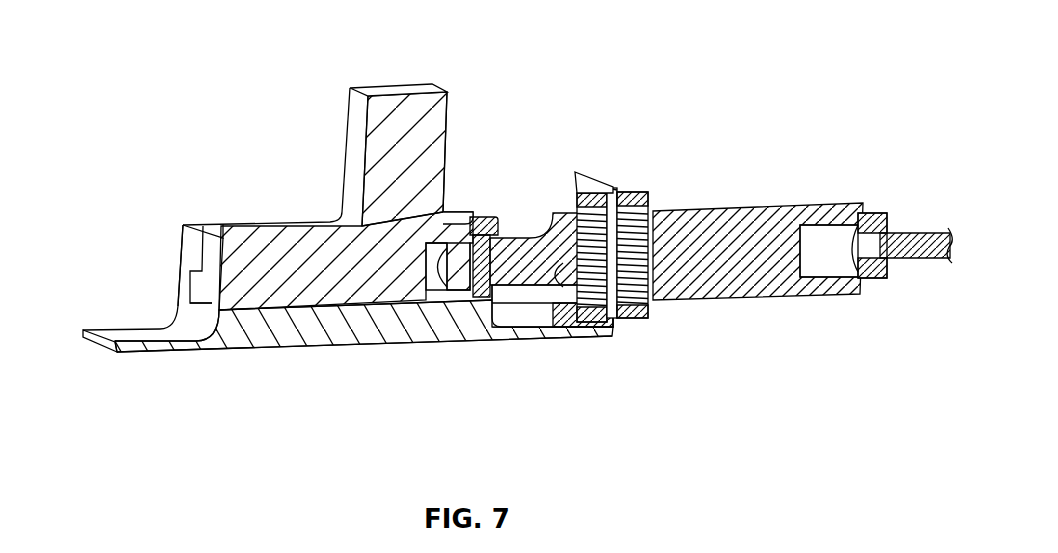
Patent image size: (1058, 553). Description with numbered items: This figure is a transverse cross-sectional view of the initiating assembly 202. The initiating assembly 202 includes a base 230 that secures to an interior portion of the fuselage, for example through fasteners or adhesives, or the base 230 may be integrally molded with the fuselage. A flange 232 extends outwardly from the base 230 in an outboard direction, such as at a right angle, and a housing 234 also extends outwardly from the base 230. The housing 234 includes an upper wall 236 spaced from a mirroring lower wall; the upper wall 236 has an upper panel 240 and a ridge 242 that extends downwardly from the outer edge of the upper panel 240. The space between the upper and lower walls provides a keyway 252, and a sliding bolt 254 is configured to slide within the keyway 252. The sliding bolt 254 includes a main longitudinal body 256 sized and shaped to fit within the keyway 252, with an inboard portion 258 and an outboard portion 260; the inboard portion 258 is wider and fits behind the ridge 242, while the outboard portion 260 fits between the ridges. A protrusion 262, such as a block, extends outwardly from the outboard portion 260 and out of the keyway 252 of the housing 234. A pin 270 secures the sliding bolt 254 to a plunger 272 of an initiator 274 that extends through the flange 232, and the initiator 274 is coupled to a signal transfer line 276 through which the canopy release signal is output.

The initiating assembly 202 is at (496, 225).
The base 230 is at (130, 353).
The flange 232 is at (588, 174).
The housing 234 is at (181, 243).
The upper wall 236 is at (180, 262).
The upper panel 240 is at (196, 302).
The ridge 242 is at (198, 224).
The keyway 252 is at (178, 311).
The sliding bolt 254 is at (460, 120).
The main longitudinal body 256 is at (284, 280).
The inboard portion 258 is at (361, 291).
The outboard portion 260 is at (293, 253).
The protrusion 262 is at (402, 90).
The pin 270 is at (488, 217).
The plunger 272 is at (562, 303).
The initiator 274 is at (724, 225).
The signal transfer line 276 is at (903, 258).